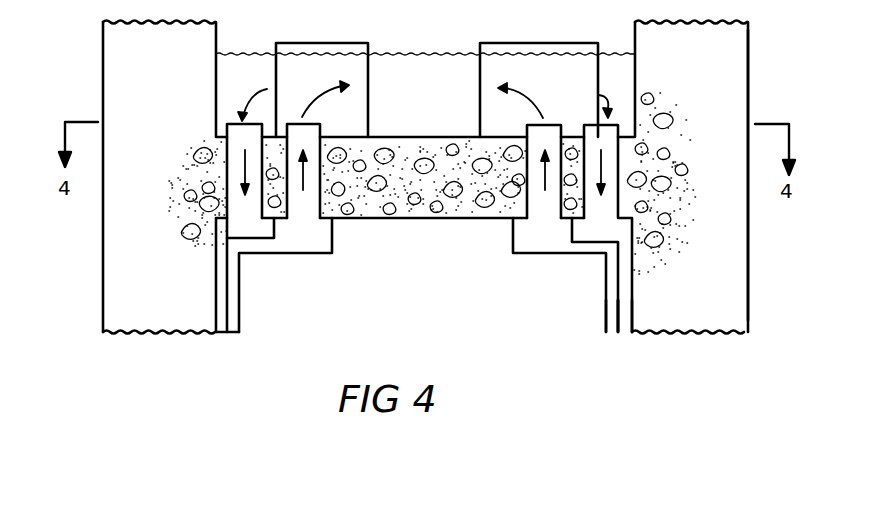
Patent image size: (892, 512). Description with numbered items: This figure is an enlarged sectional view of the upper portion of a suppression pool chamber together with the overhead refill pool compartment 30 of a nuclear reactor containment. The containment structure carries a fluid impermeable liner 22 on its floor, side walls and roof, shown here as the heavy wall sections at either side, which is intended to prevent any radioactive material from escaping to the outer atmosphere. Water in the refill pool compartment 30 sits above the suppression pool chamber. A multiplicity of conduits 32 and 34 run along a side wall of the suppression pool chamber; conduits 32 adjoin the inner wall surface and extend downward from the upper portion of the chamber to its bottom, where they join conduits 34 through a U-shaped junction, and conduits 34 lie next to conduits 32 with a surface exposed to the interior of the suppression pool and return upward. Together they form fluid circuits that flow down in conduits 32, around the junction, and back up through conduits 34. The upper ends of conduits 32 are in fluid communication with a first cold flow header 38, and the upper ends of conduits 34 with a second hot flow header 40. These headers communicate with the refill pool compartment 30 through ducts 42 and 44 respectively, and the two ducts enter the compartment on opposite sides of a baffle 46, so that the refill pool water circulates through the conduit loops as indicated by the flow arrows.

The fluid impermeable liner 22 is at (748, 282).
The refill pool compartment 30 is at (620, 54).
The baffle 46 is at (490, 43).
The duct 44 is at (542, 208).
The duct 42 is at (600, 207).
The second hot flow header 40 is at (547, 243).
The first cold flow header 38 is at (607, 232).
The conduit 34 is at (607, 333).
The conduit 32 is at (622, 333).